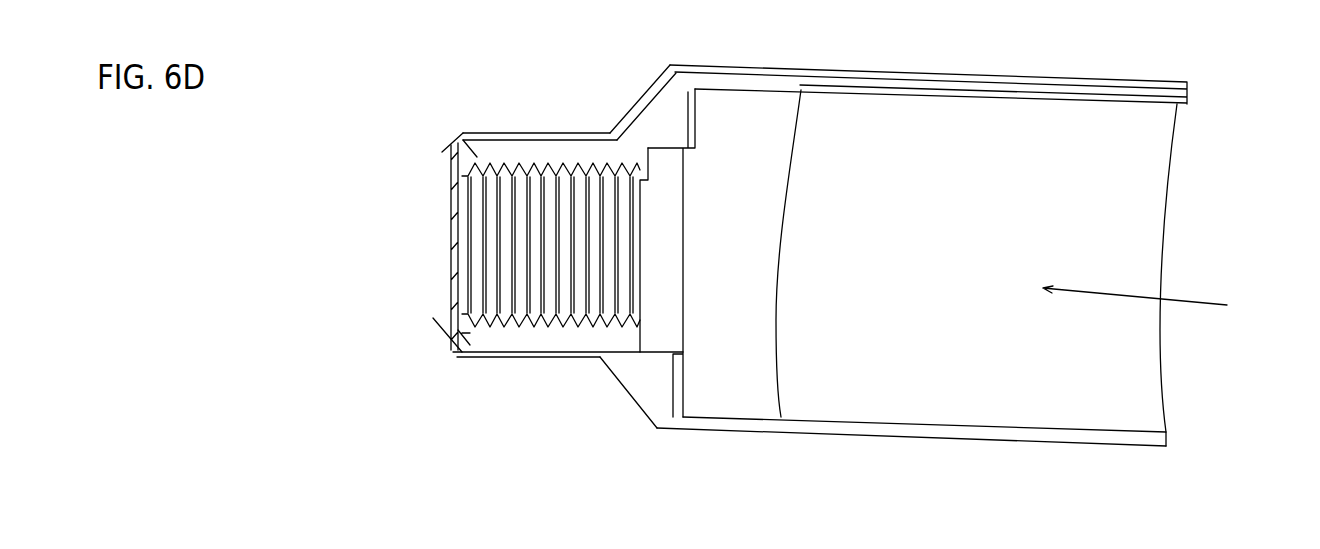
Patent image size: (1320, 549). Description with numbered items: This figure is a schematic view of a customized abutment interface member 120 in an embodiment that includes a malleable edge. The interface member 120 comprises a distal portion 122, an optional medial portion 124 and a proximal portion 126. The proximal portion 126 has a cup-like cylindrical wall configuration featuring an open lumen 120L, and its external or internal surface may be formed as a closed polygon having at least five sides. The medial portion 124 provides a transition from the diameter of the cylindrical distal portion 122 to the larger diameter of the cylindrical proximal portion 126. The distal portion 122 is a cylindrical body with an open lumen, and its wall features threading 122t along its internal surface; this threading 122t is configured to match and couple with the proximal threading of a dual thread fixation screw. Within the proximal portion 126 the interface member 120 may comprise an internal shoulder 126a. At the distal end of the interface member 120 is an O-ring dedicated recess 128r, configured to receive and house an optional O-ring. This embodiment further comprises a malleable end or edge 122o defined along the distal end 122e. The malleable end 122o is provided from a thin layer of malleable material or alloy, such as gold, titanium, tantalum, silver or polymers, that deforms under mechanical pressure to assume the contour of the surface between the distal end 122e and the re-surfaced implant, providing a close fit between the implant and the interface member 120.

The abutment interface member 120 is at (690, 477).
The open lumen 120L is at (1174, 302).
The distal portion 122 is at (512, 132).
The distal end 122e is at (405, 200).
The malleable end 122o is at (450, 133).
The threading 122t is at (526, 308).
The medial portion 124 is at (642, 100).
The proximal portion 126 is at (1143, 230).
The internal shoulder 126a is at (755, 113).
The O-ring recess 128r is at (462, 335).